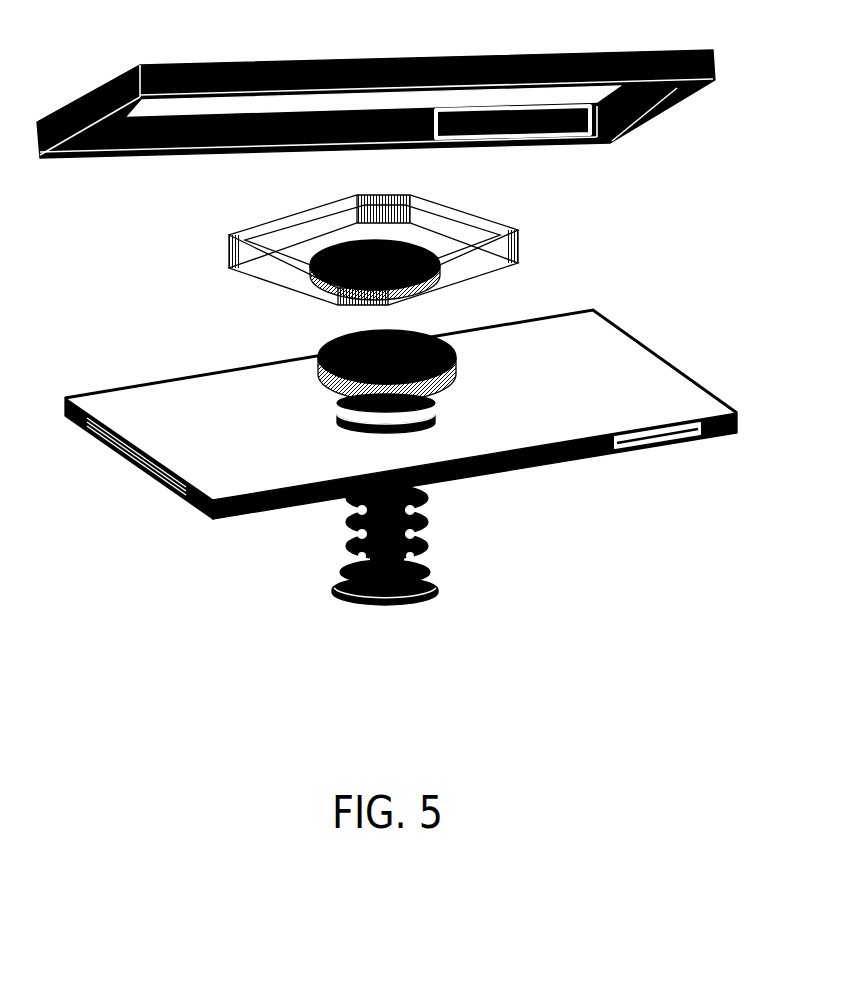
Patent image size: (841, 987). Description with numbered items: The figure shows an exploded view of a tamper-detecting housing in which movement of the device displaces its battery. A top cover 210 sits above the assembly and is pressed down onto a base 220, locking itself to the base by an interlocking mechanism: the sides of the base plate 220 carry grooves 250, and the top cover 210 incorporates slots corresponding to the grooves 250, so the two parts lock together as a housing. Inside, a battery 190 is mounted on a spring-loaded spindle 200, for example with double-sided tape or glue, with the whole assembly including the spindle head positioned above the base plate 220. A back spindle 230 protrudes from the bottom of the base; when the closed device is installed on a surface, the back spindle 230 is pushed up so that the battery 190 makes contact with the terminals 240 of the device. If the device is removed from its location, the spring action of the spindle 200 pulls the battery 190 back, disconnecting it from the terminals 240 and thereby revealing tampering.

The top cover 210 is at (240, 62).
The terminals 240 is at (253, 228).
The battery 190 is at (322, 343).
The back spindle 230 is at (345, 422).
The base 220 is at (197, 508).
The grooves 250 is at (108, 443).
The spring-loaded spindle 200 is at (425, 532).